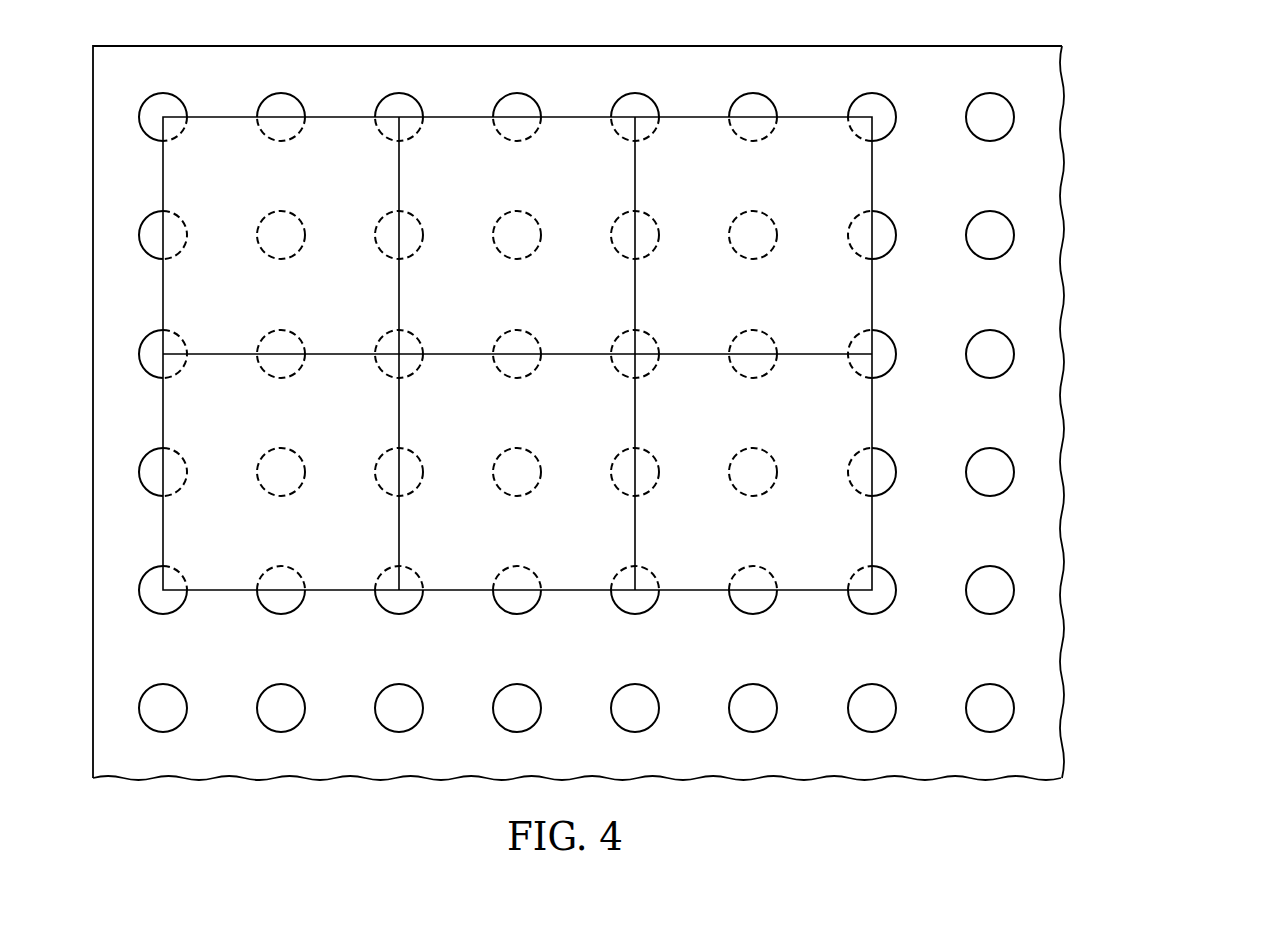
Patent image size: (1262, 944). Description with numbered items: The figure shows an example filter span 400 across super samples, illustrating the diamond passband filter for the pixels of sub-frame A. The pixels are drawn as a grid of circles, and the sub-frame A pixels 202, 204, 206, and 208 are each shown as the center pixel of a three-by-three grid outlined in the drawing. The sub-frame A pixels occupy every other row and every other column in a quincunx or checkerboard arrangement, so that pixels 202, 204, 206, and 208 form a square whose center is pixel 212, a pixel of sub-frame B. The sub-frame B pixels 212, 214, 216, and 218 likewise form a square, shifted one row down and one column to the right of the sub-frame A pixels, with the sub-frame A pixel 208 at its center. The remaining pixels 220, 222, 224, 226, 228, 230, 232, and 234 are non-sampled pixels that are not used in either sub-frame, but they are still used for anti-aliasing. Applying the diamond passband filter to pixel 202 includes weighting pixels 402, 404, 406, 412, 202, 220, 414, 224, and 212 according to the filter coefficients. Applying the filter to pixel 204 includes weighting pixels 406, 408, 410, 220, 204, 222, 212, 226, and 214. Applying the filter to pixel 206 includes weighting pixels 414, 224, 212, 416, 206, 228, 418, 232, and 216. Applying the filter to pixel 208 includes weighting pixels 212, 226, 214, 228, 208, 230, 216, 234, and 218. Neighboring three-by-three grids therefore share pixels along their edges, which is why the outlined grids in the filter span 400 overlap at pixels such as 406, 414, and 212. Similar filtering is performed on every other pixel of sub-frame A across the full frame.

The filter span 400 is at (1155, 305).
The pixel 402 is at (158, 140).
The pixel 404 is at (276, 140).
The pixel 406 is at (394, 140).
The pixel 408 is at (512, 140).
The pixel 410 is at (639, 140).
The pixel 412 is at (158, 258).
The pixel 414 is at (158, 377).
The pixel 416 is at (158, 495).
The pixel 418 is at (158, 613).
The pixel of sub-frame A 202 is at (276, 258).
The pixel of sub-frame A 204 is at (512, 258).
The pixel of sub-frame A 206 is at (276, 495).
The pixel of sub-frame A 208 is at (512, 495).
The pixel of sub-frame B 212 is at (394, 377).
The pixel of sub-frame B 214 is at (639, 377).
The pixel of sub-frame B 216 is at (394, 613).
The pixel of sub-frame B 218 is at (639, 613).
The non-sampled pixel 220 is at (394, 258).
The non-sampled pixel 222 is at (639, 258).
The non-sampled pixel 224 is at (276, 377).
The non-sampled pixel 226 is at (512, 377).
The non-sampled pixel 228 is at (394, 495).
The non-sampled pixel 230 is at (639, 495).
The non-sampled pixel 232 is at (276, 613).
The non-sampled pixel 234 is at (512, 613).